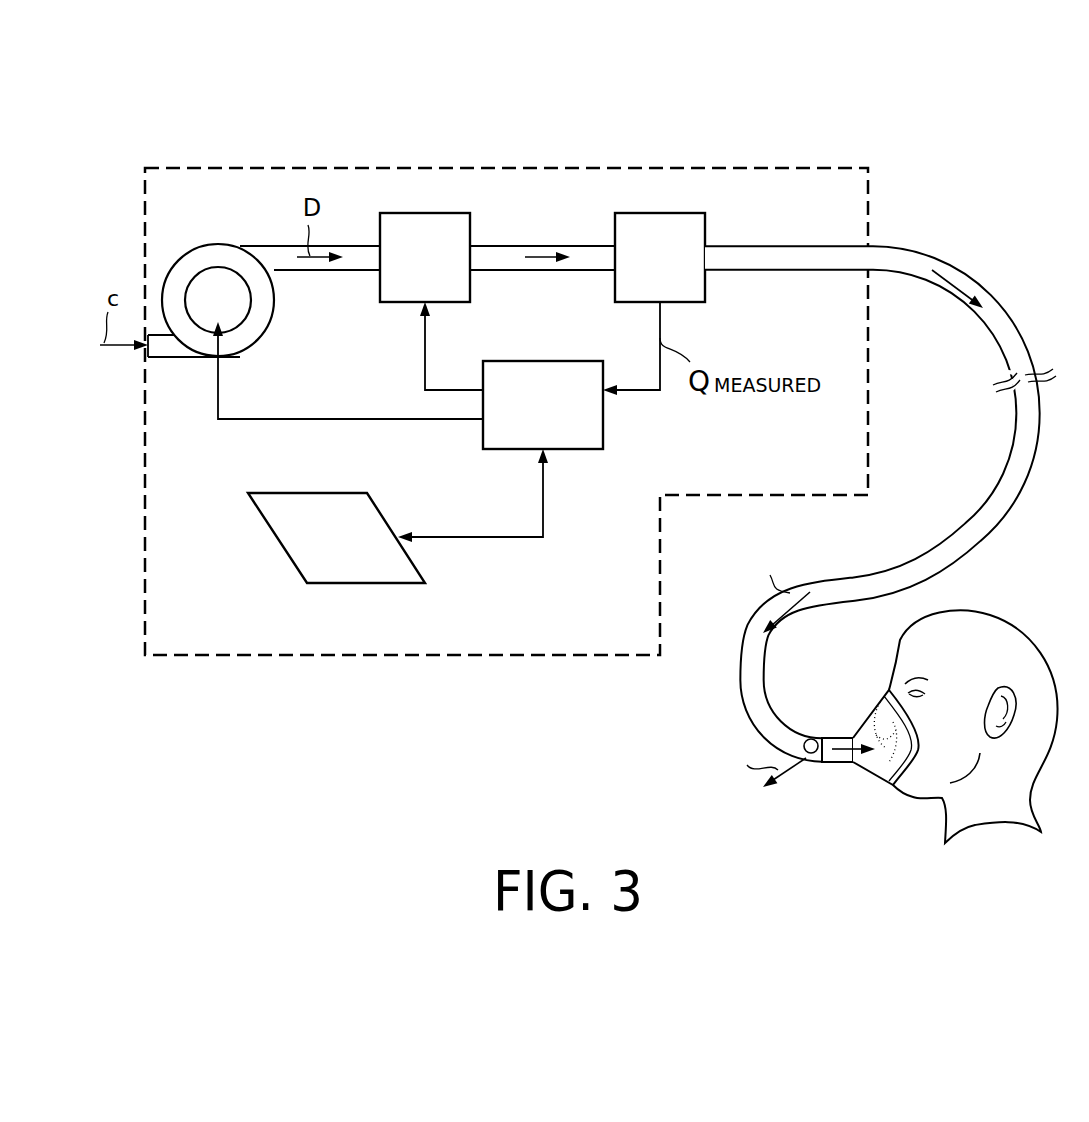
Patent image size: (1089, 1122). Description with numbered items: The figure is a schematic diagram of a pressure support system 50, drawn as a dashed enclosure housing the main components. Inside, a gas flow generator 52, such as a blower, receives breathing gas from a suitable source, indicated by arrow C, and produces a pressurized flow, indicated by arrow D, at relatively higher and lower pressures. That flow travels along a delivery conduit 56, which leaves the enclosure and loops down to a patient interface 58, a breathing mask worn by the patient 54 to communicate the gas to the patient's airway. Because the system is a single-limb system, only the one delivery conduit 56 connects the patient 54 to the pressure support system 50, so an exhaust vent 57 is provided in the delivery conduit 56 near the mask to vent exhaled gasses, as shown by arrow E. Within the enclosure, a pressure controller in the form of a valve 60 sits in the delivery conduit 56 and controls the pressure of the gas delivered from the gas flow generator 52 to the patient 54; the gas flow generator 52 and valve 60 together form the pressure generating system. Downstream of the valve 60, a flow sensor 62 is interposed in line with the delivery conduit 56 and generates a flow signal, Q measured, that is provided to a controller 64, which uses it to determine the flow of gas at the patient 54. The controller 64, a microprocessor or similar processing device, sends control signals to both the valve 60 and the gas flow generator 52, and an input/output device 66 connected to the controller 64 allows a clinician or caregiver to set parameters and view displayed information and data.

The pressure support system 50 is at (229, 143).
The gas flow generator 52 is at (208, 245).
The patient 54 is at (1047, 628).
The delivery conduit 56 is at (947, 257).
The exhaust vent 57 is at (811, 754).
The patient interface 58 is at (876, 781).
The valve 60 is at (411, 271).
The flow sensor 62 is at (646, 271).
The controller 64 is at (529, 418).
The input/output device 66 is at (321, 551).